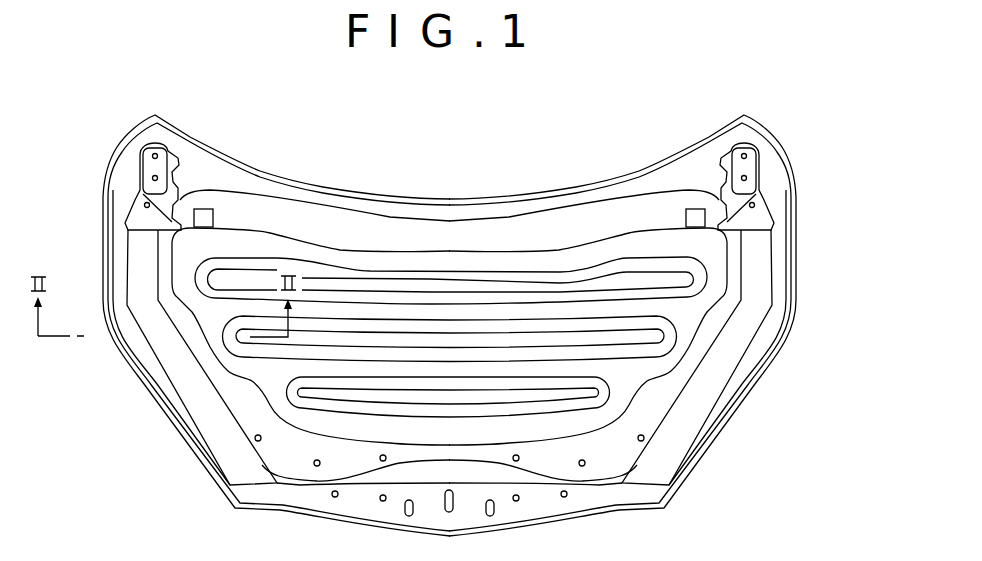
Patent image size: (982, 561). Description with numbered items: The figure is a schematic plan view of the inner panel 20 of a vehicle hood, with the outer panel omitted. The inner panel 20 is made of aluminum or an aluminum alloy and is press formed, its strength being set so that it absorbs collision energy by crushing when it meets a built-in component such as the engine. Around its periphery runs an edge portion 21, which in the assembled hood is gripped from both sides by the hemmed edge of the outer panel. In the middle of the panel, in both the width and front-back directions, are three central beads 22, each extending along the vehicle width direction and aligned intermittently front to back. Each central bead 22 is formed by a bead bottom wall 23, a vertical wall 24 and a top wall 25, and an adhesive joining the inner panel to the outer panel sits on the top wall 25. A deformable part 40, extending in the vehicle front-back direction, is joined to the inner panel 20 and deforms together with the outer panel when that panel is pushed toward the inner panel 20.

The inner panel 20 is at (633, 168).
The edge portion 21 is at (146, 389).
The central beads 22 is at (547, 141).
The bead bottom wall 23 is at (478, 290).
The vertical wall 24 is at (427, 275).
The top wall 25 is at (377, 261).
The deformable part 40 is at (138, 268).